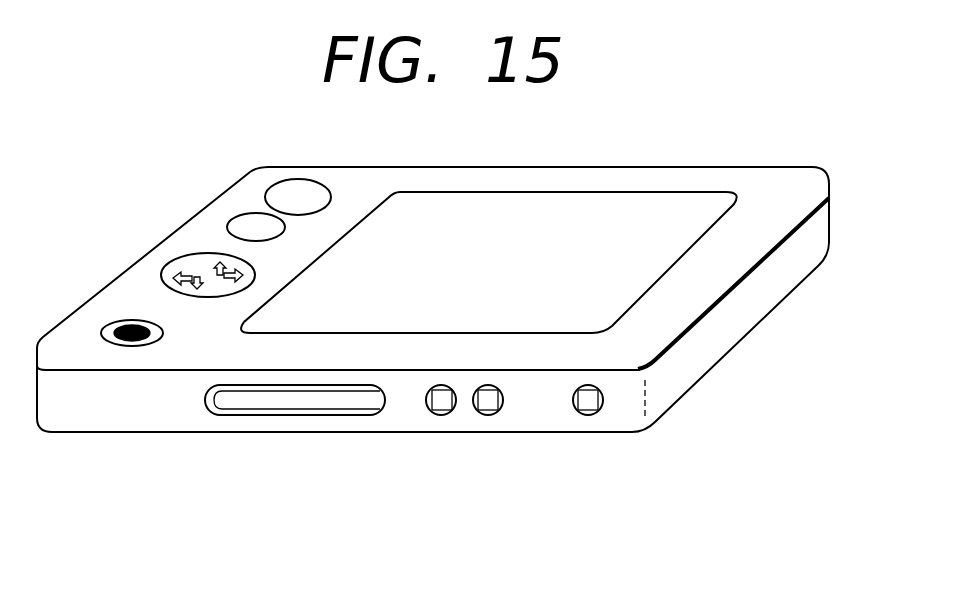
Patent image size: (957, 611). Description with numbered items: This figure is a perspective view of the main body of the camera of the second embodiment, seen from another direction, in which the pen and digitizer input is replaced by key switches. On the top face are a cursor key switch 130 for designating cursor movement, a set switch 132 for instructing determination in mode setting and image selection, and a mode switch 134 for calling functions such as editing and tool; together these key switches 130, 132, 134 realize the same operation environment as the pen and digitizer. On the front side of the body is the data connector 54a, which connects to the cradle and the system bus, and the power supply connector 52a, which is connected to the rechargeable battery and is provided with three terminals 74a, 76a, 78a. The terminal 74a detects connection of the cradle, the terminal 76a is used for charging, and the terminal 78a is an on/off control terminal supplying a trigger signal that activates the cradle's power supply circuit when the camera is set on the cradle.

The cursor key switch 130 is at (183, 265).
The set switch 132 is at (235, 222).
The mode switch 134 is at (266, 190).
The data connector 54a is at (288, 403).
The terminal 74a is at (443, 402).
The terminal 76a is at (487, 402).
The terminal 78a is at (599, 453).
The power supply connector 52a is at (529, 482).